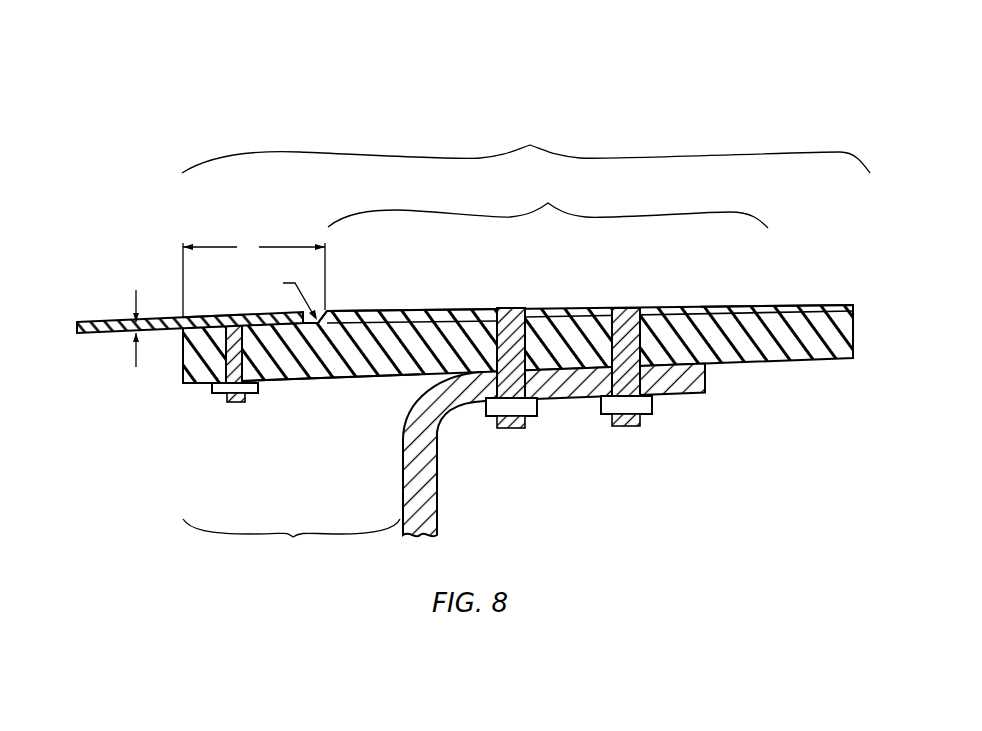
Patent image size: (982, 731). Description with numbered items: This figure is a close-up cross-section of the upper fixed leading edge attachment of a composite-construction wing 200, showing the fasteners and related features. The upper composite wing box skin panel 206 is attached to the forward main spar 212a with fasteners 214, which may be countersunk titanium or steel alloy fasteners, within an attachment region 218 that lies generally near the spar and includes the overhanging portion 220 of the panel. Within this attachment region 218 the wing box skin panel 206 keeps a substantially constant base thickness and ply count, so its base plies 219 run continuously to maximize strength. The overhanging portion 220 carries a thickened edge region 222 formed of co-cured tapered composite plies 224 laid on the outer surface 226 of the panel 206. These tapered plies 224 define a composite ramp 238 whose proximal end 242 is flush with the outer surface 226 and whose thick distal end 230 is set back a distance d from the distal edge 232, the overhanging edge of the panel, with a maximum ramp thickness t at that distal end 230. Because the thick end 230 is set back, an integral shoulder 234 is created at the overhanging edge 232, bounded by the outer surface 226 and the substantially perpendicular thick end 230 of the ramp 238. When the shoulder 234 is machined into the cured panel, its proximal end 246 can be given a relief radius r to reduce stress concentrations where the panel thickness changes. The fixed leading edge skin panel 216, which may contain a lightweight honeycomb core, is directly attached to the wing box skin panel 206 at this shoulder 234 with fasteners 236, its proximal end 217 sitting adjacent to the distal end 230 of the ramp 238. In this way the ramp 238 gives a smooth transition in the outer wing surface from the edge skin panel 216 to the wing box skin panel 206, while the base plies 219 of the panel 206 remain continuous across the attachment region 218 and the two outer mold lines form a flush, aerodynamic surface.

The wing 200 is at (191, 80).
The upper composite wing box skin panel 206 is at (780, 342).
The forward main spar 212a is at (423, 500).
The fasteners 214 is at (525, 428).
The fixed leading edge skin panel 216 is at (102, 318).
The proximal end 217 is at (278, 383).
The attachment region 218 is at (526, 148).
The plies 219 is at (340, 378).
The overhanging portion 220 is at (291, 537).
The thickened edge region 222 is at (548, 205).
The tapered composite plies 224 is at (368, 318).
The outer surface 226 is at (822, 300).
The distal end 230 is at (327, 316).
The distal edge 232 is at (183, 364).
The integral shoulder 234 is at (200, 318).
The fasteners 236 is at (238, 397).
The composite ramp 238 is at (433, 318).
The proximal end 242 is at (767, 306).
The proximal end of the shoulder 246 is at (298, 314).
The setback distance d is at (254, 277).
The maximum ramp thickness t is at (136, 336).
The relief radius r is at (293, 296).